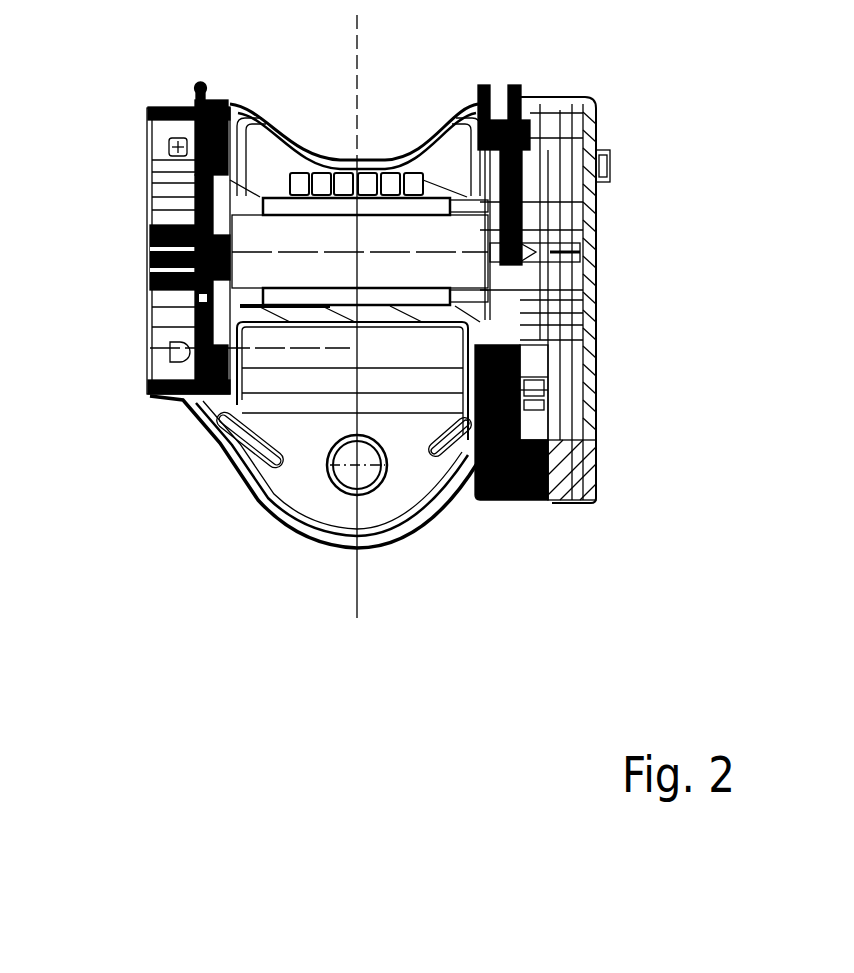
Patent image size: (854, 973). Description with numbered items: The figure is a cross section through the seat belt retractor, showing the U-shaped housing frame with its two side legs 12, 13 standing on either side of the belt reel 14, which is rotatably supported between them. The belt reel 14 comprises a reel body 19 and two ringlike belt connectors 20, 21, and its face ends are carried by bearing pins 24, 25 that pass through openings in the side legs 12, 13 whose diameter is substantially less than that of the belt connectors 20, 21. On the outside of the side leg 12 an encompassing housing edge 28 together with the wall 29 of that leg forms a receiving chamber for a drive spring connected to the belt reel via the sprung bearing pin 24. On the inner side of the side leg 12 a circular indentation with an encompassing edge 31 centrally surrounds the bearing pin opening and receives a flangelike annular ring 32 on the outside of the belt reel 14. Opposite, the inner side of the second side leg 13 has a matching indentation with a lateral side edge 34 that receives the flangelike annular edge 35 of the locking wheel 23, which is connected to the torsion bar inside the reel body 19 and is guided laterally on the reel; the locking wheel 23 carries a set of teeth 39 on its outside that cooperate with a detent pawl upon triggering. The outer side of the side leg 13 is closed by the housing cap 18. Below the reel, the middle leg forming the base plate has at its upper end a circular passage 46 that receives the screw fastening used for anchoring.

The side leg 12 is at (183, 425).
The side leg 13 is at (530, 523).
The belt reel 14 is at (258, 185).
The housing cap 18 is at (577, 477).
The reel body 19 is at (435, 177).
The belt connector 20 is at (228, 140).
The belt connector 21 is at (478, 125).
The locking wheel 23 is at (555, 330).
The bearing pin 24 is at (148, 253).
The bearing pin 25 is at (582, 243).
The housing edge 28 is at (147, 396).
The wall 29 is at (193, 315).
The encompassing edge 31 is at (232, 120).
The annular ring 32 is at (197, 157).
The side edge 34 is at (535, 158).
The annular edge 35 is at (530, 390).
The set of teeth 39 is at (522, 399).
The passage 46 is at (347, 477).